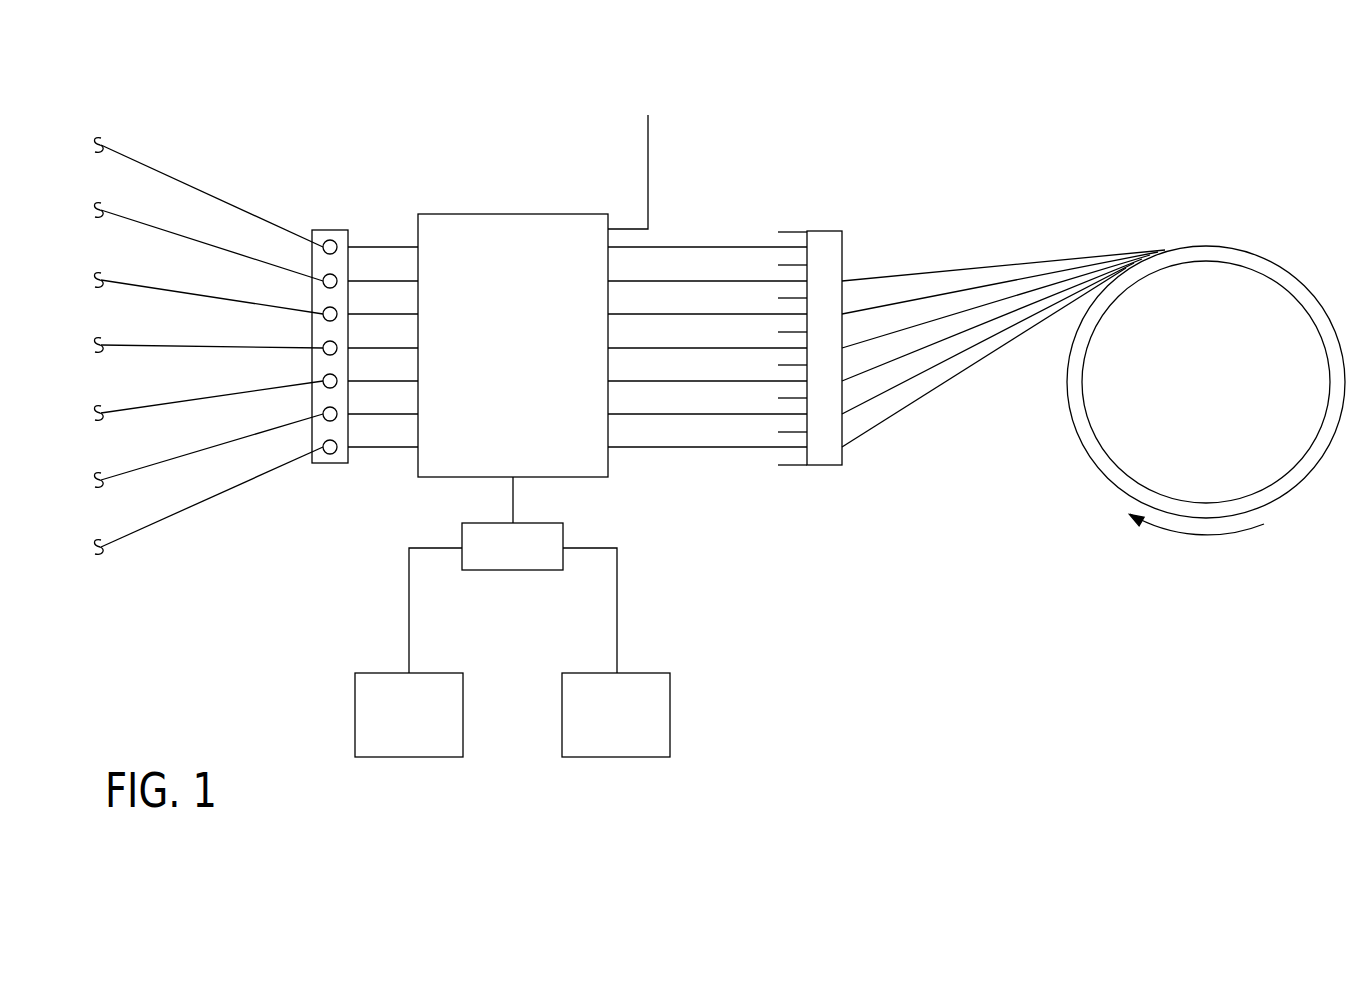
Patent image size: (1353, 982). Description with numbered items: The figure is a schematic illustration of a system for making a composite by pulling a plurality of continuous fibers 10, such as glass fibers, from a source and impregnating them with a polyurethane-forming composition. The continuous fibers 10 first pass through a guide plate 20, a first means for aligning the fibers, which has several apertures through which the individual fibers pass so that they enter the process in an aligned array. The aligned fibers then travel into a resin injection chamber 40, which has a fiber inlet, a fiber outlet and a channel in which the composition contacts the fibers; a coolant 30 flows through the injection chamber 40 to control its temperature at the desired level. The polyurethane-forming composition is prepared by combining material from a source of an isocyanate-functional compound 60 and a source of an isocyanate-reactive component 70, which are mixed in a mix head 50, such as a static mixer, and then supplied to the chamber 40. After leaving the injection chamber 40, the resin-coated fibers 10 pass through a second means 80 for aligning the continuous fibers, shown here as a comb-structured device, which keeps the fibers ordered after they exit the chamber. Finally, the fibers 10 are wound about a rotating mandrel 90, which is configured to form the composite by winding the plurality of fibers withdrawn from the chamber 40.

The continuous fibers 10 is at (140, 143).
The guide plate 20 is at (320, 228).
The coolant 30 is at (415, 228).
The resin injection chamber 40 is at (497, 359).
The mix head 50 is at (567, 525).
The source of isocyanate-functional compound 60 is at (425, 731).
The source of isocyanate-reactive component 70 is at (633, 731).
The second means for aligning the continuous fibers 80 is at (827, 230).
The mandrel 90 is at (1225, 234).